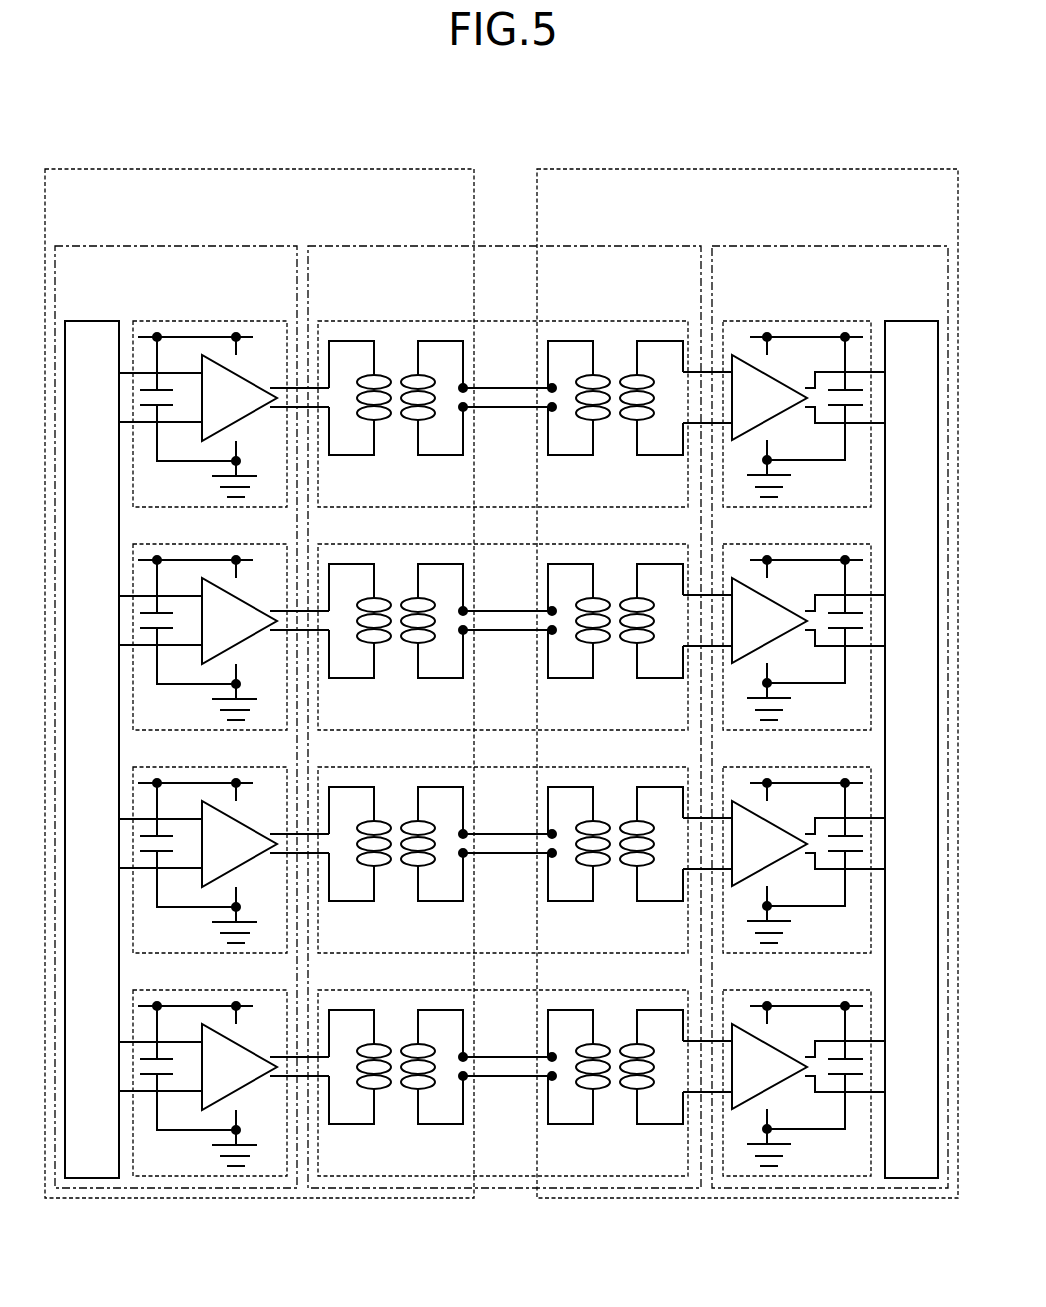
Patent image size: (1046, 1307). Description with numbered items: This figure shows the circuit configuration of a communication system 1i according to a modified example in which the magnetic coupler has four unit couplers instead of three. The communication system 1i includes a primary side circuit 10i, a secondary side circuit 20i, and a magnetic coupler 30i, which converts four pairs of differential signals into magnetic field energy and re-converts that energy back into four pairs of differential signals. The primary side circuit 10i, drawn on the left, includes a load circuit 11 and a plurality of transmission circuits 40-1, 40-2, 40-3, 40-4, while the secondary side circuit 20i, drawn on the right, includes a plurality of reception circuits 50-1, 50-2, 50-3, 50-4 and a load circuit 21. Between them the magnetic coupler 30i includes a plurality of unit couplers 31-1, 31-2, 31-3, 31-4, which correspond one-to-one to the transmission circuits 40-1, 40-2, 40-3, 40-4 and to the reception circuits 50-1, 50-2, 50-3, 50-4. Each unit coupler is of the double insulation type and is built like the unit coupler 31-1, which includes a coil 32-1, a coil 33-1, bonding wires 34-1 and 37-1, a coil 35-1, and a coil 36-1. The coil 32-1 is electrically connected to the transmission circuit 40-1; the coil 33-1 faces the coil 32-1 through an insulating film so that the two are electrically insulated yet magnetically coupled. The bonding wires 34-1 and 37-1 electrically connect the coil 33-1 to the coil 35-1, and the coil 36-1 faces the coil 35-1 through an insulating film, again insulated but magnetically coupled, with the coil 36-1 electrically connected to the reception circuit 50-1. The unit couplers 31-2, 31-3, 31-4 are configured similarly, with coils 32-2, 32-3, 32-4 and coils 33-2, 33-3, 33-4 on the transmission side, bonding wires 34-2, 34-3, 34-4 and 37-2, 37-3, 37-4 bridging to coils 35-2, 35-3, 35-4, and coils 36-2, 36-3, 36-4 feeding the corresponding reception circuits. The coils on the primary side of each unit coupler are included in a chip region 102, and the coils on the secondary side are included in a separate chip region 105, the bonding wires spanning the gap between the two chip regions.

The communication system 1i is at (501, 651).
The chip region 102 is at (259, 671).
The chip region 105 is at (747, 671).
The primary side circuit 10i is at (176, 705).
The magnetic coupler 30i is at (504, 705).
The secondary side circuit 20i is at (830, 705).
The load circuit 11 is at (92, 737).
The load circuit 21 is at (911, 737).
The transmission circuit 40-1 is at (224, 402).
The transmission circuit 40-2 is at (224, 625).
The transmission circuit 40-3 is at (224, 848).
The transmission circuit 40-4 is at (224, 1071).
The unit coupler 31-1 is at (503, 402).
The unit coupler 31-2 is at (503, 625).
The unit coupler 31-3 is at (503, 848).
The unit coupler 31-4 is at (503, 1071).
The coil 32-1 is at (360, 414).
The coil 32-2 is at (360, 637).
The coil 32-3 is at (360, 860).
The coil 32-4 is at (360, 1083).
The coil 33-1 is at (432, 414).
The coil 33-2 is at (432, 637).
The coil 33-3 is at (432, 860).
The coil 33-4 is at (432, 1083).
The bonding wire 34-1 is at (507, 362).
The bonding wire 34-2 is at (507, 585).
The bonding wire 34-3 is at (507, 808).
The bonding wire 34-4 is at (507, 1031).
The coil 35-1 is at (579, 414).
The coil 35-2 is at (579, 637).
The coil 35-3 is at (579, 860).
The coil 35-4 is at (579, 1083).
The coil 36-1 is at (651, 414).
The coil 36-2 is at (651, 637).
The coil 36-3 is at (651, 860).
The coil 36-4 is at (651, 1083).
The bonding wire 37-1 is at (507, 445).
The bonding wire 37-2 is at (507, 668).
The bonding wire 37-3 is at (507, 891).
The bonding wire 37-4 is at (507, 1114).
The reception circuit 50-1 is at (784, 402).
The reception circuit 50-2 is at (784, 625).
The reception circuit 50-3 is at (784, 848).
The reception circuit 50-4 is at (784, 1071).